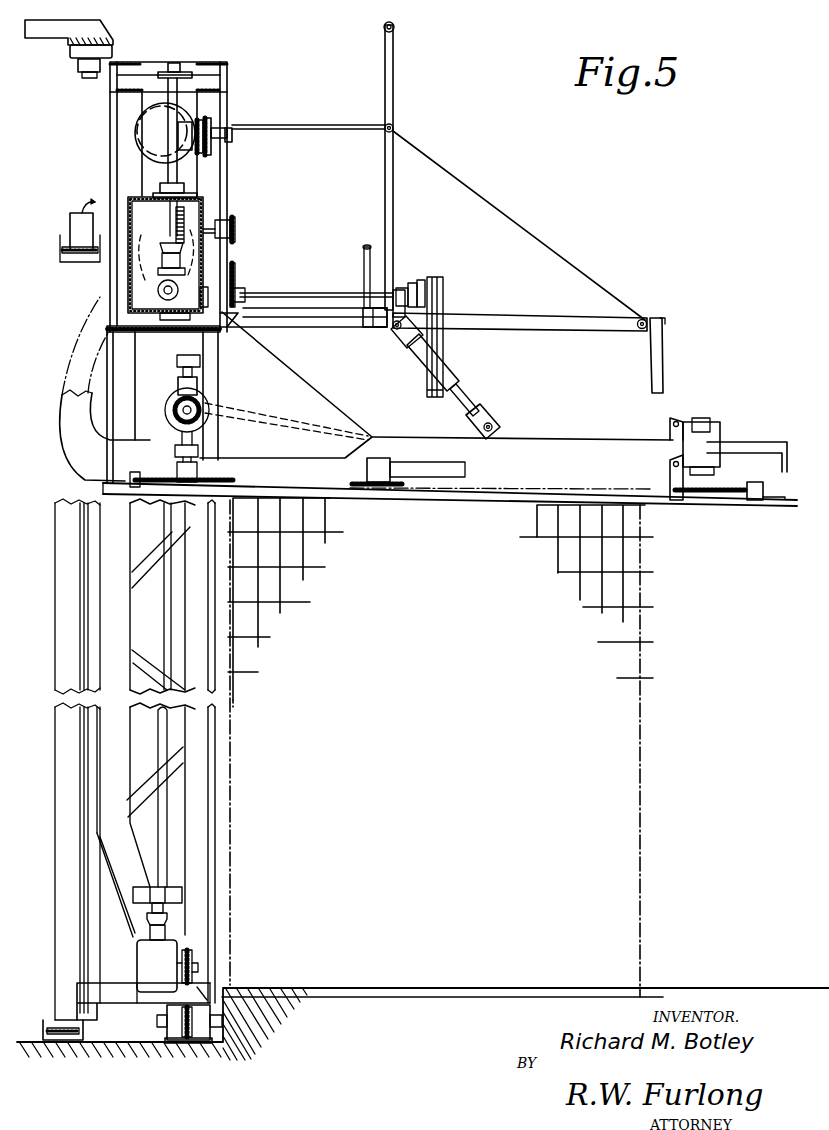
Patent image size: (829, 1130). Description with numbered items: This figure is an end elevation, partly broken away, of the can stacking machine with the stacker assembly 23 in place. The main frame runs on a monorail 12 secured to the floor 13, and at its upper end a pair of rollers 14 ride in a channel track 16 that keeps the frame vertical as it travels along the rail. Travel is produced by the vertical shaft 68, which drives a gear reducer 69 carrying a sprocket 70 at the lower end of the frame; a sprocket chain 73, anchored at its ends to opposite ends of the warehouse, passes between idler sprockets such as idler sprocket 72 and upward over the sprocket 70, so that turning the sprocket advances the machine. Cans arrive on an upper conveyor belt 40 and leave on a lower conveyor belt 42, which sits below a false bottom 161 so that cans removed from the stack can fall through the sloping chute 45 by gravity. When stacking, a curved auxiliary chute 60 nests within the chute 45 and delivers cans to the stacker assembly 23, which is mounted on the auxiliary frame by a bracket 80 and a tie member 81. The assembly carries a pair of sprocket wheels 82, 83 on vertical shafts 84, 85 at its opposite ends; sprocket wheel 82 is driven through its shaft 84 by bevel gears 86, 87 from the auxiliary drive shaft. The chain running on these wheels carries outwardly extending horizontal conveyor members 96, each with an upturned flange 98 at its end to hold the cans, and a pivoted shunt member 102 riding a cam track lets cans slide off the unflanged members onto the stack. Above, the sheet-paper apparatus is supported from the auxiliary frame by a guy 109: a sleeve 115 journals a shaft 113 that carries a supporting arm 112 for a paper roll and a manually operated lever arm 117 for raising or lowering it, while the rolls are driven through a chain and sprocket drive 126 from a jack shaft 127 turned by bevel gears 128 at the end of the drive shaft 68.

The monorail 12 is at (214, 1045).
The floor 13 is at (118, 1046).
The rollers 14 is at (78, 53).
The channel track 16 is at (112, 43).
The stacker assembly 23 is at (562, 437).
The upper conveyor belt 40 is at (78, 262).
The lower conveyor belt 42 is at (60, 1047).
The chute 45 is at (63, 648).
The auxiliary chute 60 is at (73, 417).
The vertical shaft 68 is at (165, 633).
The gear reducer 69 is at (157, 1003).
The sprocket 70 is at (197, 978).
The idler sprocket 72 is at (167, 1040).
The sprocket chain 73 is at (186, 1045).
The bracket 80 is at (277, 373).
The tie member 81 is at (453, 385).
The sprocket wheel 82 is at (205, 494).
The sprocket wheel 83 is at (720, 493).
The vertical shaft 84 is at (192, 437).
The vertical shaft 85 is at (702, 458).
The bevel gear 86 is at (175, 392).
The bevel gear 87 is at (170, 408).
The conveyor members 96 is at (770, 500).
The upturned flange 98 is at (785, 497).
The shunt member 102 is at (430, 455).
The guy 109 is at (520, 202).
The supporting arm 112 is at (663, 362).
The shaft 113 is at (343, 318).
The sleeve 115 is at (533, 318).
The lever arm 117 is at (365, 247).
The chain and sprocket drive 126 is at (232, 263).
The jack shaft 127 is at (238, 233).
The bevel gears 128 is at (165, 258).
The false bottom 161 is at (281, 1008).